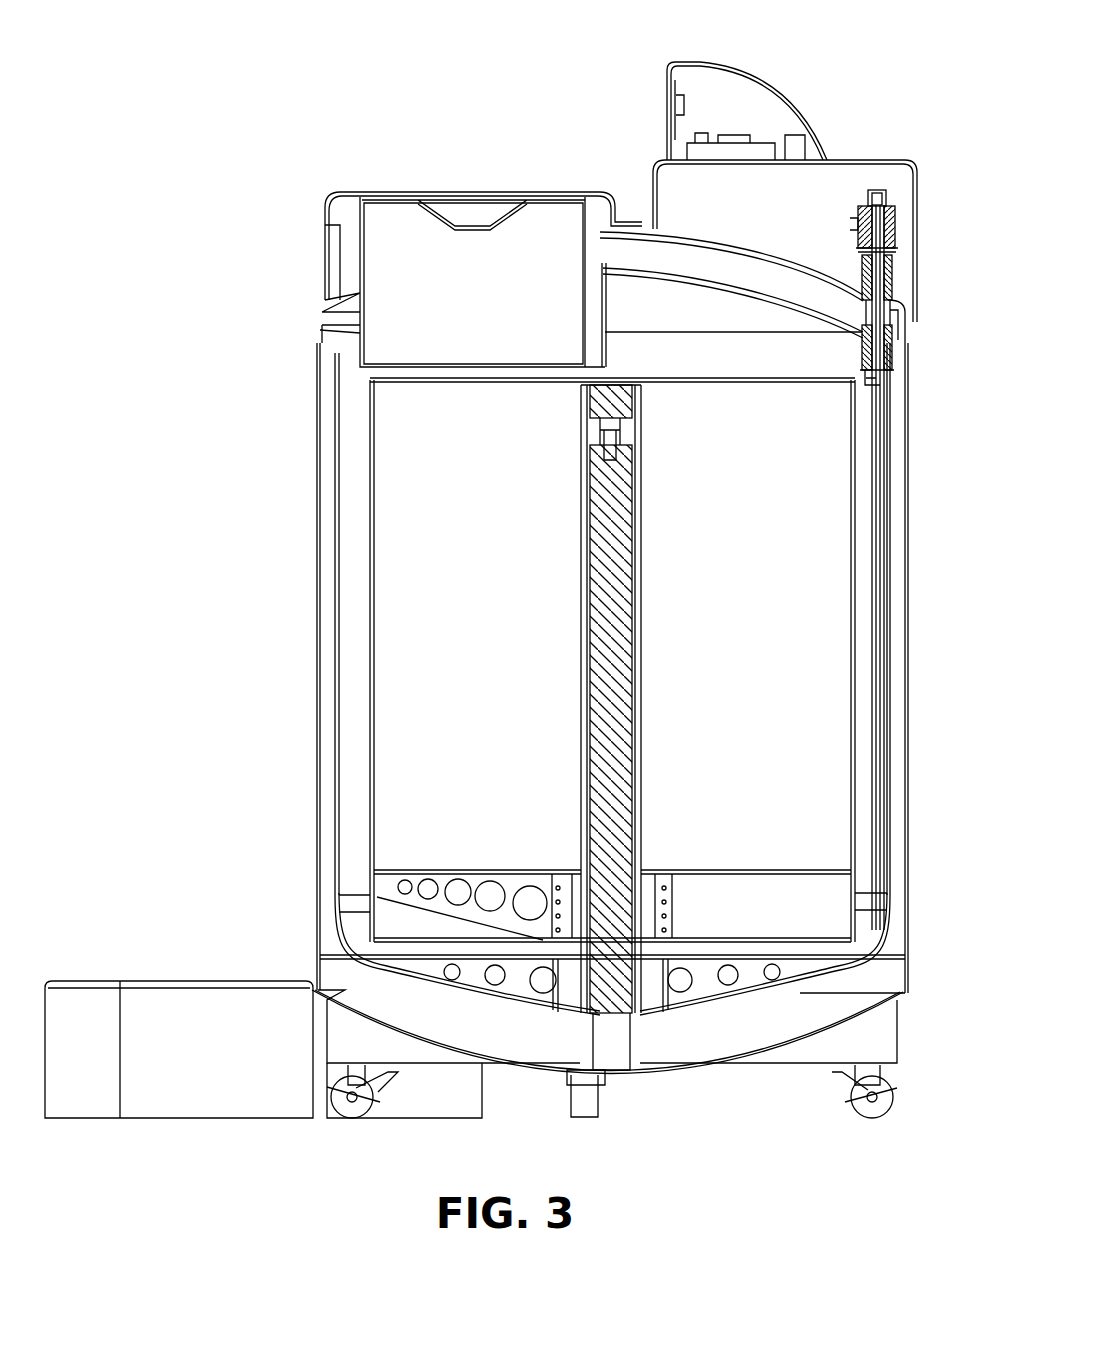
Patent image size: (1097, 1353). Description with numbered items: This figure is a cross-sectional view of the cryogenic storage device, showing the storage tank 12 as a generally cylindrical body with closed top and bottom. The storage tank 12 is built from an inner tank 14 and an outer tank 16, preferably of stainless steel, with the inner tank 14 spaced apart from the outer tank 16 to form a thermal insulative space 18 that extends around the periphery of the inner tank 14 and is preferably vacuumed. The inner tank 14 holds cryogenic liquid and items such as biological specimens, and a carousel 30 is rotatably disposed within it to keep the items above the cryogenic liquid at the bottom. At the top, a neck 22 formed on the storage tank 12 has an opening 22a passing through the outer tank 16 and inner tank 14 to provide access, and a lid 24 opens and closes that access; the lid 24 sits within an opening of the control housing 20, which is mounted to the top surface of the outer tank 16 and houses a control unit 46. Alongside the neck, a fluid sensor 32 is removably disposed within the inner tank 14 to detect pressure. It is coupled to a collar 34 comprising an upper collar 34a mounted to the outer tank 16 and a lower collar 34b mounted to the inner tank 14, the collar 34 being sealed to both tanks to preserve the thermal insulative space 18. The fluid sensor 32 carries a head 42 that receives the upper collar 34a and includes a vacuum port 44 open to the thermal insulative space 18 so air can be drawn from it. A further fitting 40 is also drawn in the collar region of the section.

The storage tank 12 is at (918, 510).
The inner tank 14 is at (853, 634).
The outer tank 16 is at (907, 563).
The thermal insulative space 18 is at (890, 708).
The control housing 20 is at (820, 70).
The neck 22 is at (607, 305).
The opening 22a is at (452, 349).
The lid 24 is at (342, 190).
The carousel 30 is at (746, 862).
The fluid sensor 32 is at (908, 418).
The collar 34 is at (838, 360).
The upper collar 34a is at (896, 267).
The lower collar 34b is at (903, 338).
The tube coupling 40 is at (890, 317).
The head 42 is at (897, 220).
The vacuum port 44 is at (851, 222).
The control unit 46 is at (735, 130).